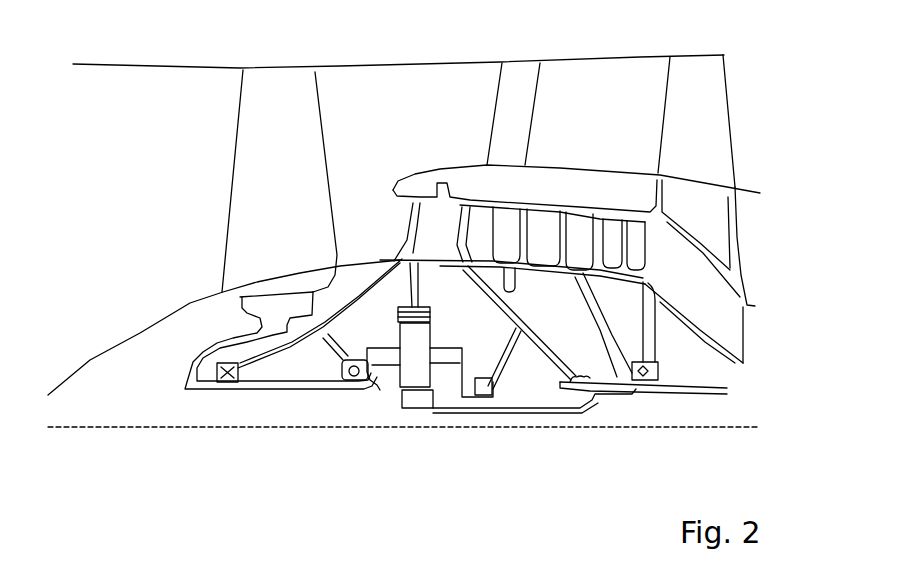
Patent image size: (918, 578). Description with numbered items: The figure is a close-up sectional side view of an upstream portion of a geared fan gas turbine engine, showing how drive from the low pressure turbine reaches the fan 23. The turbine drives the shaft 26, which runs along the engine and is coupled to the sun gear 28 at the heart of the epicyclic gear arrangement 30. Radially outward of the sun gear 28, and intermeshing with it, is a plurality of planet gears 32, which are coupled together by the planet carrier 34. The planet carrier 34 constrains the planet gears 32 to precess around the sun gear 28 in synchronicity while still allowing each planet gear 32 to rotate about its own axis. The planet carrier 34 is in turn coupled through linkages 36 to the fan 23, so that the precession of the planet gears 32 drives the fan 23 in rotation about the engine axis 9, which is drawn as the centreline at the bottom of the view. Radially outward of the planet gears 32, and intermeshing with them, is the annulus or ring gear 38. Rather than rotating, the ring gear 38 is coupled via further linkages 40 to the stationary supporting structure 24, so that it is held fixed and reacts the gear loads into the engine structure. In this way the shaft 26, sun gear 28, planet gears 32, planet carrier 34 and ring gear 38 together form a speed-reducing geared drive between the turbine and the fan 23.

The engine axis 9 is at (193, 430).
The fan 23 is at (250, 216).
The stationary supporting structure 24 is at (423, 230).
The shaft 26 is at (630, 392).
The sun gear 28 is at (415, 407).
The epicyclic gear arrangement 30 is at (377, 385).
The planet gears 32 is at (400, 374).
The planet carrier 34 is at (453, 381).
The linkages 36 is at (370, 384).
The ring gear 38 is at (400, 315).
The linkages 40 is at (423, 283).